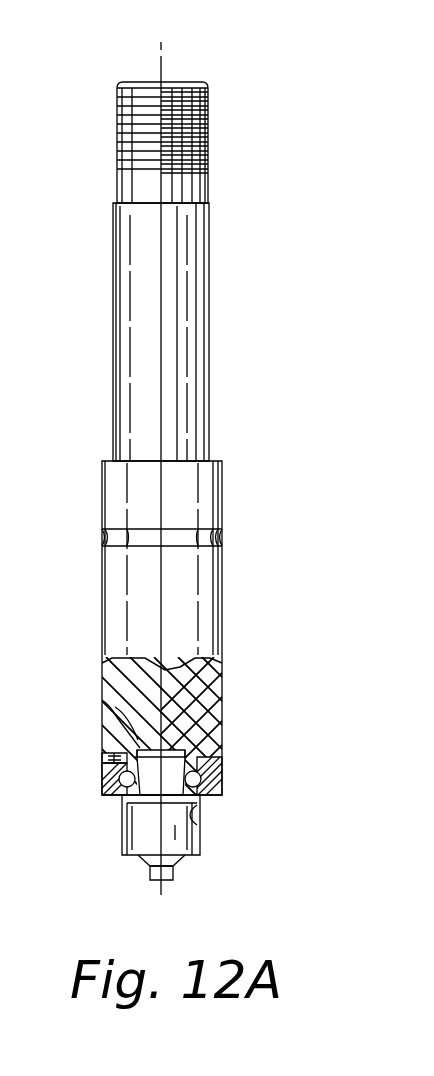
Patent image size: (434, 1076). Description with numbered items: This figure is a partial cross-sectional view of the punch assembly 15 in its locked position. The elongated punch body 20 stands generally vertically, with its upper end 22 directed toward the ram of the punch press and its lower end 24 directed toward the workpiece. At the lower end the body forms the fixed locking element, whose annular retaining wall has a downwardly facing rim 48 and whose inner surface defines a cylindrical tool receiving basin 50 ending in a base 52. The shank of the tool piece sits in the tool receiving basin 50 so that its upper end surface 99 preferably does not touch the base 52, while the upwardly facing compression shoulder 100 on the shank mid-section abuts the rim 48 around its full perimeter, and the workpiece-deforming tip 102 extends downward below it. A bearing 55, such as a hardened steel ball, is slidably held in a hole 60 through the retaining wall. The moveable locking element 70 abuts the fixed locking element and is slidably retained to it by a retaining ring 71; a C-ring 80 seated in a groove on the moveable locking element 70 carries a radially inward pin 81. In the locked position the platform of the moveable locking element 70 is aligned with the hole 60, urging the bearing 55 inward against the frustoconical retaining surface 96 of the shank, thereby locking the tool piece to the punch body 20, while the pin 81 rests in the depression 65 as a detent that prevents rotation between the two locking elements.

The punch assembly 15 is at (78, 322).
The punch body 20 is at (210, 325).
The upper end 22 is at (183, 78).
The lower end 24 is at (228, 800).
The rim 48 is at (218, 800).
The tool receiving basin 50 is at (185, 748).
The base 52 is at (135, 733).
The bearing 55 is at (220, 785).
The hole 60 is at (205, 745).
The depression 65 is at (130, 747).
The moveable locking element 70 is at (102, 793).
The retaining ring 71 is at (127, 810).
The C-ring 80 is at (210, 770).
The pin 81 is at (100, 765).
The retaining surface 96 is at (132, 827).
The upper end surface 99 is at (220, 683).
The compression shoulder 100 is at (199, 835).
The workpiece-deforming tip 102 is at (177, 878).